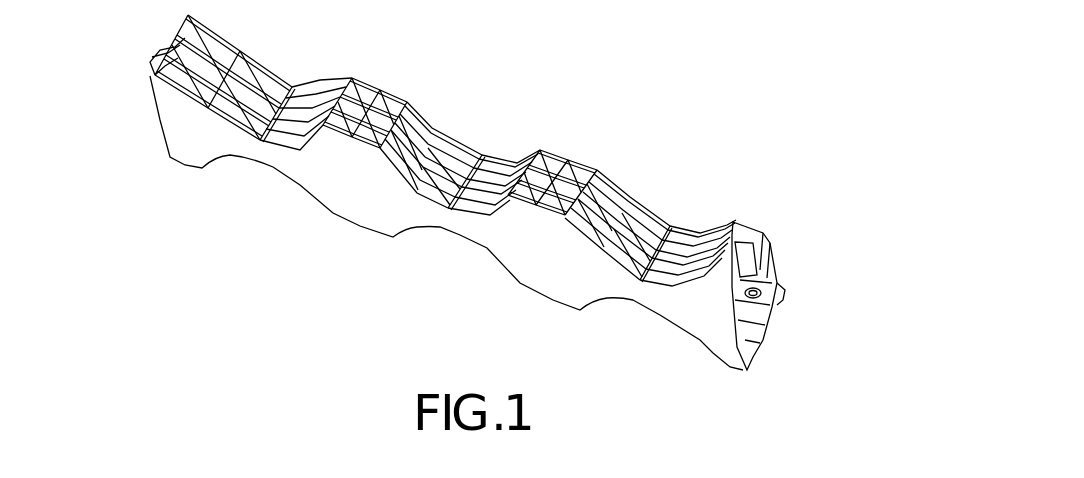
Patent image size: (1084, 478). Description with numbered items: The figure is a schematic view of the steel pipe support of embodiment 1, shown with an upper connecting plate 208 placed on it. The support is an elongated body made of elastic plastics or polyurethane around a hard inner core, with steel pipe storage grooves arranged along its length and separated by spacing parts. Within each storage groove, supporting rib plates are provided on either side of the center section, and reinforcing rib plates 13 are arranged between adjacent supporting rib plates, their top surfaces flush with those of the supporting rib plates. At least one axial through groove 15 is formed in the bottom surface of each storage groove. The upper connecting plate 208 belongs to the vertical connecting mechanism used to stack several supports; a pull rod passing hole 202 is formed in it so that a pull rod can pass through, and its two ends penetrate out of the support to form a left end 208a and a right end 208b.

The embodiment of steel pipe support 1 is at (343, 207).
The reinforcing rib plates 13 is at (235, 61).
The axial through groove 15 is at (470, 180).
The pull rod passing hole 202 is at (758, 291).
The upper connecting plate 208 is at (768, 322).
The left end 208a is at (783, 293).
The right end 208b is at (158, 84).